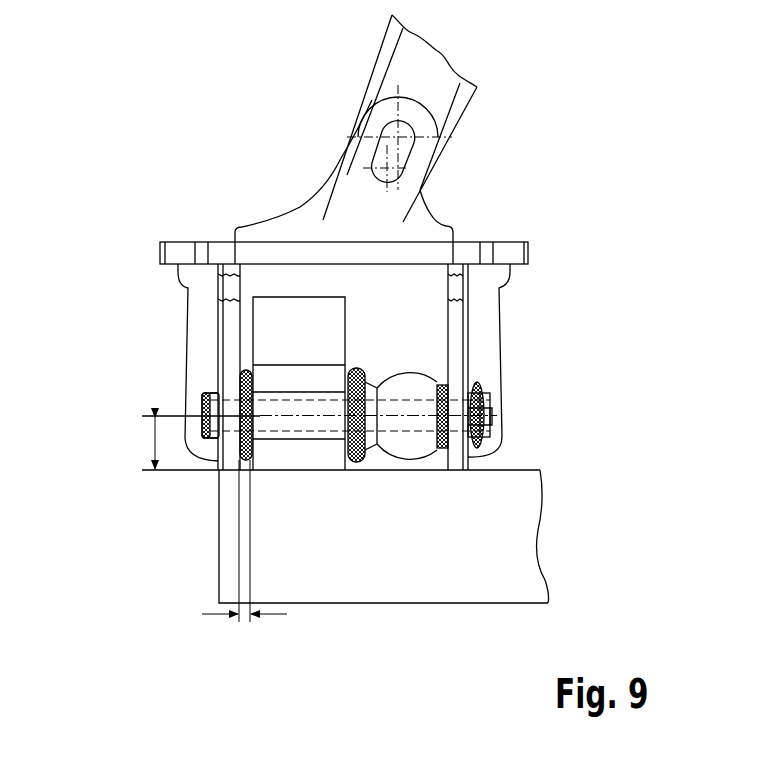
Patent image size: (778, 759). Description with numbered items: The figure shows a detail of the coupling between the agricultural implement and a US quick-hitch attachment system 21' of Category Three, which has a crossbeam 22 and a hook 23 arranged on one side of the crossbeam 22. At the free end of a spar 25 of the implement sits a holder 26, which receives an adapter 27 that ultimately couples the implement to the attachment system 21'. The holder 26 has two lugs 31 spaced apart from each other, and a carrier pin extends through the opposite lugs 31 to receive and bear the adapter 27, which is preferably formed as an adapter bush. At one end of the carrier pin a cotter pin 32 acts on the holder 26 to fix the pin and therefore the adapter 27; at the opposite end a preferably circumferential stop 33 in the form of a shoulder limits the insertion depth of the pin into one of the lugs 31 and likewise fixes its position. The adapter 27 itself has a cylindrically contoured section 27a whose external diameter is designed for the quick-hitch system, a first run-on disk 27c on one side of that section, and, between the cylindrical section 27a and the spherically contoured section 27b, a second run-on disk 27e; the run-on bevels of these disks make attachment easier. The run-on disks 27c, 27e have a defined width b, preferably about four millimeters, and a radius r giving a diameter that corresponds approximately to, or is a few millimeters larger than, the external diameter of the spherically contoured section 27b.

The US quick-hitch attachment system of Category 3 21' is at (588, 636).
The crossbeam 22 is at (532, 523).
The hook 23 is at (292, 323).
The spar 25 is at (393, 65).
The holder 26 is at (162, 328).
The adapter 27 is at (387, 463).
The cylindrically contoured section 27a is at (277, 407).
The spherically contoured section 27b is at (408, 447).
The first run-on disk 27c is at (357, 368).
The second run-on disk 27e is at (243, 370).
The lug 31 is at (228, 314).
The cotter pin 32 is at (498, 408).
The stop 33 is at (213, 385).
The radius r is at (155, 442).
The width b is at (247, 622).